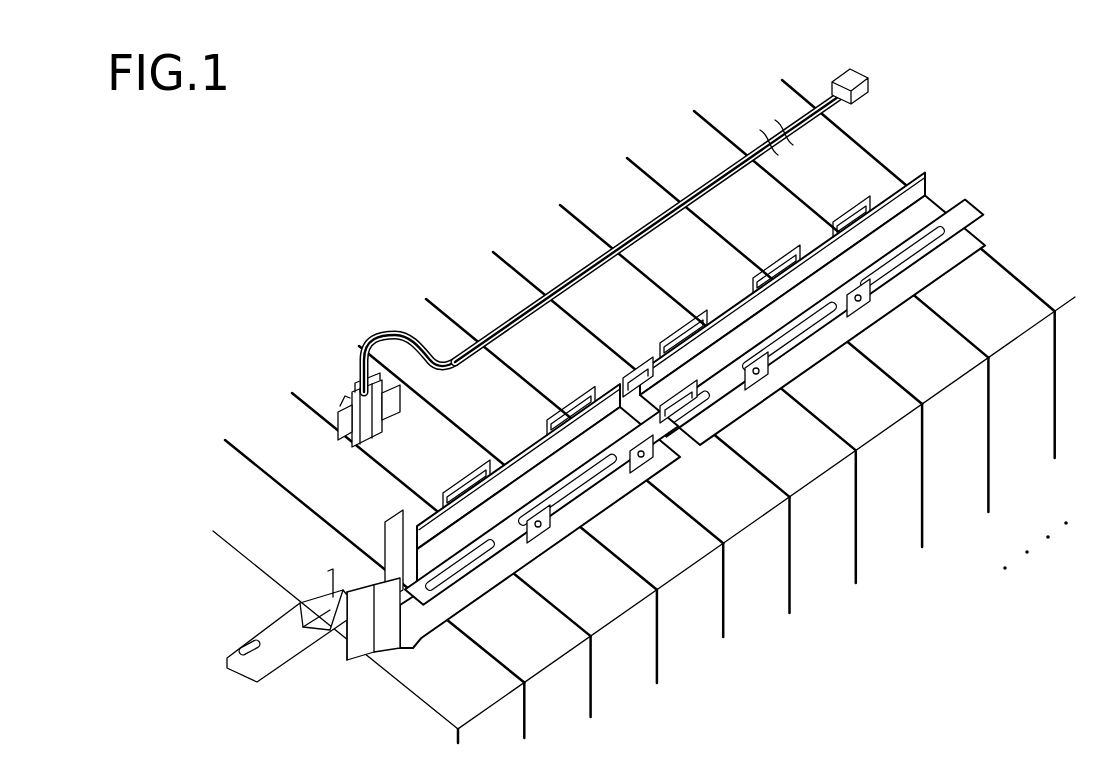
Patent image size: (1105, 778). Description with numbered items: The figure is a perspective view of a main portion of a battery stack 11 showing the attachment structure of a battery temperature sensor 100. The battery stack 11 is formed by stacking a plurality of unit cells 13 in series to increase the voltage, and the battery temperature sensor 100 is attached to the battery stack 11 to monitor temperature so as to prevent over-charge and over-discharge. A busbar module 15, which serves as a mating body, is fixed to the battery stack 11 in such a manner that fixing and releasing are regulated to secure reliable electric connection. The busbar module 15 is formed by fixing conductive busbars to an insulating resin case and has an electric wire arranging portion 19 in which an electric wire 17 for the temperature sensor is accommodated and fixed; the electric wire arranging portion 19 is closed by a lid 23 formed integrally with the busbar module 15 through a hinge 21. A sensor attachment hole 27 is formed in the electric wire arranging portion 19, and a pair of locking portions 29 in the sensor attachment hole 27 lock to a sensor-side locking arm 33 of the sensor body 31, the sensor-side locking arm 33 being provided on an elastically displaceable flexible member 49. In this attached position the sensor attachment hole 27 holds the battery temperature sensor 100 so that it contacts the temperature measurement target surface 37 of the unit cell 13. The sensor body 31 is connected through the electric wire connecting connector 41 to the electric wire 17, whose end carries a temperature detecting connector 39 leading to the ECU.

The battery stack 11 is at (1100, 525).
The unit cell 13 is at (773, 568).
The busbar module 15 is at (968, 214).
The electric wire 17 is at (566, 290).
The electric wire arranging portion 19 is at (738, 306).
The hinge 21 is at (815, 326).
The lid 23 is at (797, 343).
The sensor attachment hole 27 is at (383, 579).
The locking portion 29 is at (415, 580).
The sensor body 31 is at (344, 404).
The sensor-side locking arm 33 is at (404, 401).
The temperature measurement target surface 37 is at (428, 688).
The temperature detecting connector 39 is at (866, 73).
The electric wire connecting connector 41 is at (359, 391).
The flexible member 49 is at (400, 363).
The battery temperature sensor 100 is at (322, 343).